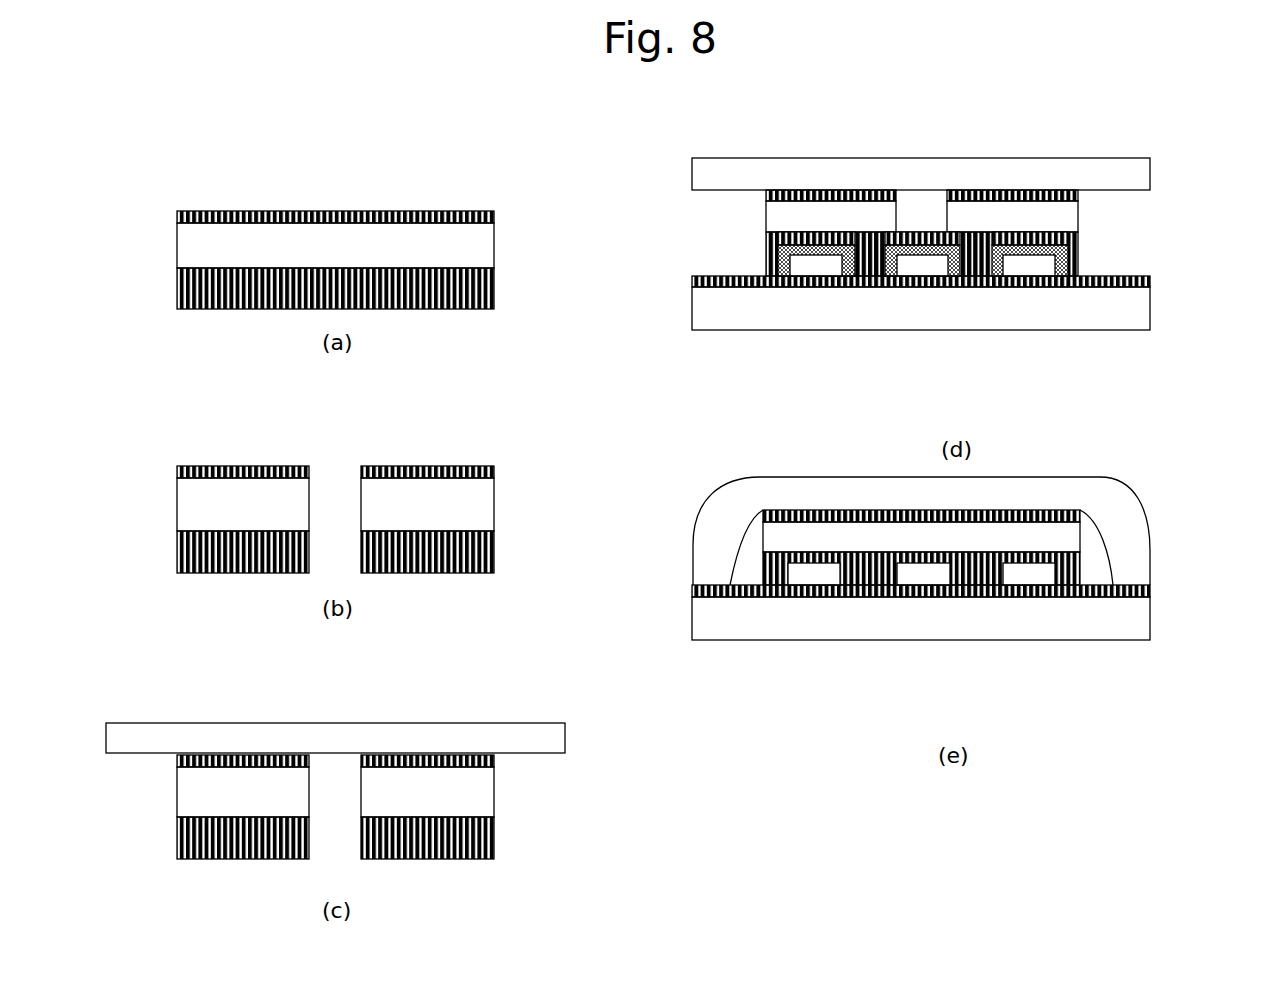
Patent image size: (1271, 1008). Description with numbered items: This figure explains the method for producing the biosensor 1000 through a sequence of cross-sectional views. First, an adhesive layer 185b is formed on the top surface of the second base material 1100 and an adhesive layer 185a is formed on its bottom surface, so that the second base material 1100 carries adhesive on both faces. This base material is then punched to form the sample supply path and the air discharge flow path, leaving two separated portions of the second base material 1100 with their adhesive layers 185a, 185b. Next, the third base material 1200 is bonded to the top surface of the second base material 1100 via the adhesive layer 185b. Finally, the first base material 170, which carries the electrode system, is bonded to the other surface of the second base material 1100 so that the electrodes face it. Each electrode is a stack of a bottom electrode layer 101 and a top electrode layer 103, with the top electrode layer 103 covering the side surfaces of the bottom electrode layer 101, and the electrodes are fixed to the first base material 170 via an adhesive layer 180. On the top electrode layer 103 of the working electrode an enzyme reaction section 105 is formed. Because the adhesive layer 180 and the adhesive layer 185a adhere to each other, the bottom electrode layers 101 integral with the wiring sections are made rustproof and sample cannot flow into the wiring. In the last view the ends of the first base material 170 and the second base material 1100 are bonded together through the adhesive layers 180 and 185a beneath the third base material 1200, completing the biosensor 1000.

The third base material 1200 is at (548, 738).
The adhesive layer 185b is at (494, 213).
The second base material 1100 is at (494, 247).
The adhesive layer 185a is at (494, 272).
The enzyme reaction section 105 is at (950, 275).
The top electrode layer 103 is at (817, 267).
The bottom electrode layer 101 is at (855, 273).
The adhesive layer 180 is at (1152, 282).
The first base material 170 is at (1145, 315).
The biosensor 1000 is at (969, 499).